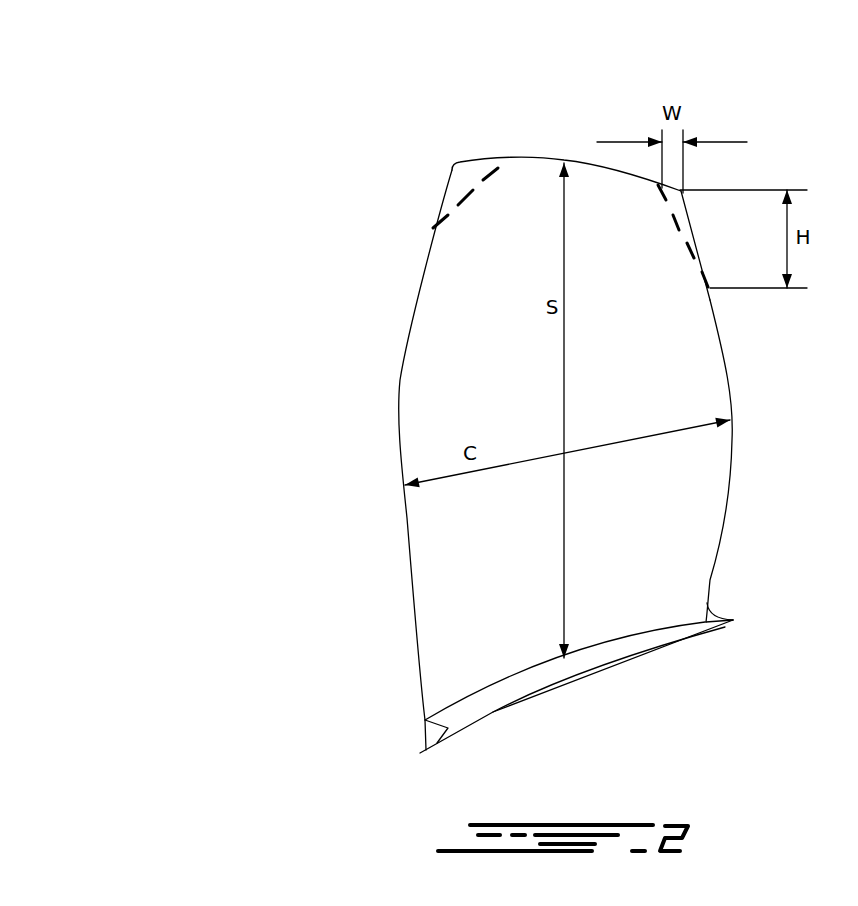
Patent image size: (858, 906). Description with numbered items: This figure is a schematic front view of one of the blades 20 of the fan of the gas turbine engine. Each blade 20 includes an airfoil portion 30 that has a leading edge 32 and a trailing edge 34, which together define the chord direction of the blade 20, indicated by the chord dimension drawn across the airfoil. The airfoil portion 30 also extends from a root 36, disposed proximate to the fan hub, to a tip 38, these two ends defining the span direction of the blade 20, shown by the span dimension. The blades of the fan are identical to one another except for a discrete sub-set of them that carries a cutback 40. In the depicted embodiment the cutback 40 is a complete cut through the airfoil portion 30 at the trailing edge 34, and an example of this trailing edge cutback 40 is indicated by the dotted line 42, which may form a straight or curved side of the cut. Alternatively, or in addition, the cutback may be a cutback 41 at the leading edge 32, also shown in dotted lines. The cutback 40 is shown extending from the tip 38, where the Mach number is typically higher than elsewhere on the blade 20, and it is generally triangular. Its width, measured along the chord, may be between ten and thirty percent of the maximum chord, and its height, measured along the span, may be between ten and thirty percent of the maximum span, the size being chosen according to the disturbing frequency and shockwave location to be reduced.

The blade 20 is at (237, 163).
The airfoil portion 30 is at (658, 415).
The leading edge 32 is at (407, 518).
The trailing edge 34 is at (720, 555).
The root 36 is at (423, 720).
The tip 38 is at (470, 163).
The cutback 40 is at (685, 207).
The leading edge cutback 41 is at (450, 185).
The dotted line 42 is at (680, 247).